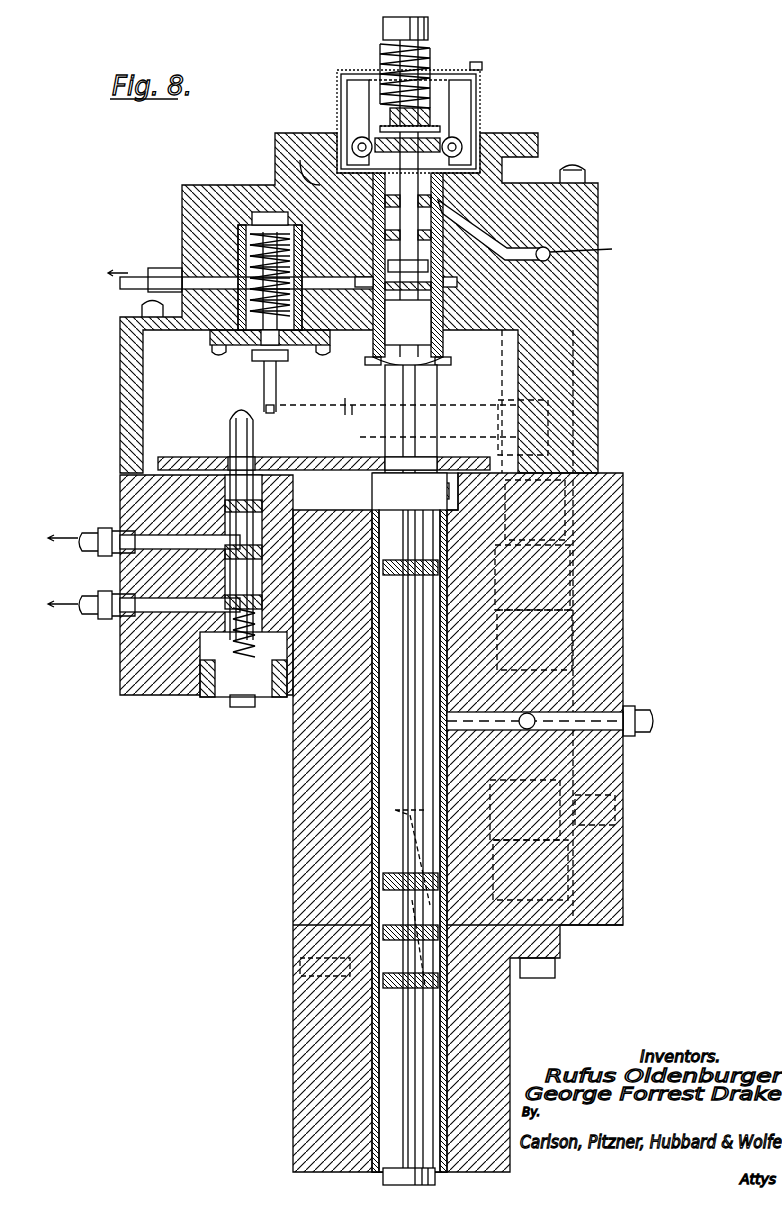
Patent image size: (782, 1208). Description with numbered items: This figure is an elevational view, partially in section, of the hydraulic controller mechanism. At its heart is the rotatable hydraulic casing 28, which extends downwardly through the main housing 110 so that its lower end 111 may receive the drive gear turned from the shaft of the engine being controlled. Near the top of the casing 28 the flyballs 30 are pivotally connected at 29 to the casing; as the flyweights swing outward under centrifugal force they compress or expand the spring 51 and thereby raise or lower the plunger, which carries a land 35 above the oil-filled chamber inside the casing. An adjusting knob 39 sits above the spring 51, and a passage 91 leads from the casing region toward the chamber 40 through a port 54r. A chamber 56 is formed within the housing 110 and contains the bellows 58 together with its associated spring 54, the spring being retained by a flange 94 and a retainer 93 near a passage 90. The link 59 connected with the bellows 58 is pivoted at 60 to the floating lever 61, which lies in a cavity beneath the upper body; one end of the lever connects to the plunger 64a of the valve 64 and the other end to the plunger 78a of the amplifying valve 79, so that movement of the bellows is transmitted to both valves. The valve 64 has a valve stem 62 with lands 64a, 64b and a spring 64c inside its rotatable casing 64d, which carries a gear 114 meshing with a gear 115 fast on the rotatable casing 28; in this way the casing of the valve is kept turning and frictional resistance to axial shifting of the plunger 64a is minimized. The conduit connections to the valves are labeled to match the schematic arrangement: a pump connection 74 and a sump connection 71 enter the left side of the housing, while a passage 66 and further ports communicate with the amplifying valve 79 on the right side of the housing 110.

The adjusting knob 39 is at (428, 26).
The spring S1 51 is at (432, 58).
The flyballs 30 is at (346, 88).
The pivot 29 is at (355, 142).
The land 35 is at (325, 195).
The passage to chamber 40 91 is at (440, 196).
The spring S4 54 is at (255, 258).
The passage port 54r is at (542, 247).
The chamber 40 is at (628, 249).
The chamber 56 is at (305, 240).
The bellows 58 is at (300, 268).
The passage 90 is at (443, 297).
The flange 94 is at (322, 298).
The spring retainer 93 is at (256, 352).
The link 59 is at (280, 378).
The pivot 60 is at (278, 405).
The floating lever 61 is at (349, 396).
The valve stem 62 is at (245, 402).
The rotatable hydraulic casing 28 is at (418, 395).
The passage 66 is at (518, 393).
The gear 114 is at (208, 449).
The gear 115 is at (360, 455).
The plunger 78a is at (598, 459).
The valve 64 is at (200, 620).
The valve plunger 64a is at (232, 590).
The valve land 64b is at (235, 530).
The valve spring 64c is at (288, 624).
The rotatable casing 64d is at (228, 494).
The pump connection 74 is at (121, 406).
The sump connection 71 is at (121, 602).
The amplifying valve 79 is at (575, 605).
The main housing 110 is at (296, 812).
The lower end 111 is at (380, 1178).